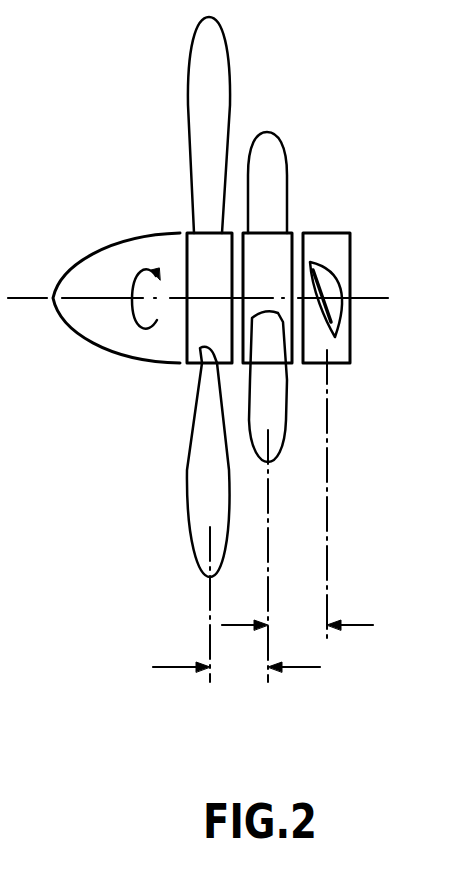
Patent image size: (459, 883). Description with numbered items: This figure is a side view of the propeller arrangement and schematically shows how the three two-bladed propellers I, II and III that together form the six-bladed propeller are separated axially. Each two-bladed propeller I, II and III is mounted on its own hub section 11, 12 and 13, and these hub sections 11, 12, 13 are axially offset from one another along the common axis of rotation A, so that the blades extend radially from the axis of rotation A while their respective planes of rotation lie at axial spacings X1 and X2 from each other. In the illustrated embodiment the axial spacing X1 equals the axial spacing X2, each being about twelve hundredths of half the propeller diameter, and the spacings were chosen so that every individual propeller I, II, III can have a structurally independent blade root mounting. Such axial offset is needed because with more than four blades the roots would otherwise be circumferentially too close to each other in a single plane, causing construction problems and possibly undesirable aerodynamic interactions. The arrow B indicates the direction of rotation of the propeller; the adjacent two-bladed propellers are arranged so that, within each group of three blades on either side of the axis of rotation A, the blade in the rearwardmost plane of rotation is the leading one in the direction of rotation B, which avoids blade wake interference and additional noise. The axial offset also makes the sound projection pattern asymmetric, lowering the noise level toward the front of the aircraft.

The hub section 11 is at (362, 314).
The hub section 12 is at (301, 270).
The hub section 13 is at (138, 297).
The 2-bladed propeller I is at (398, 234).
The 2-bladed propeller II is at (315, 79).
The 2-bladed propeller III is at (45, 35).
The axis of rotation A is at (21, 298).
The direction of rotation B is at (130, 316).
The axial spacing X1 is at (297, 618).
The axial spacing X2 is at (236, 675).